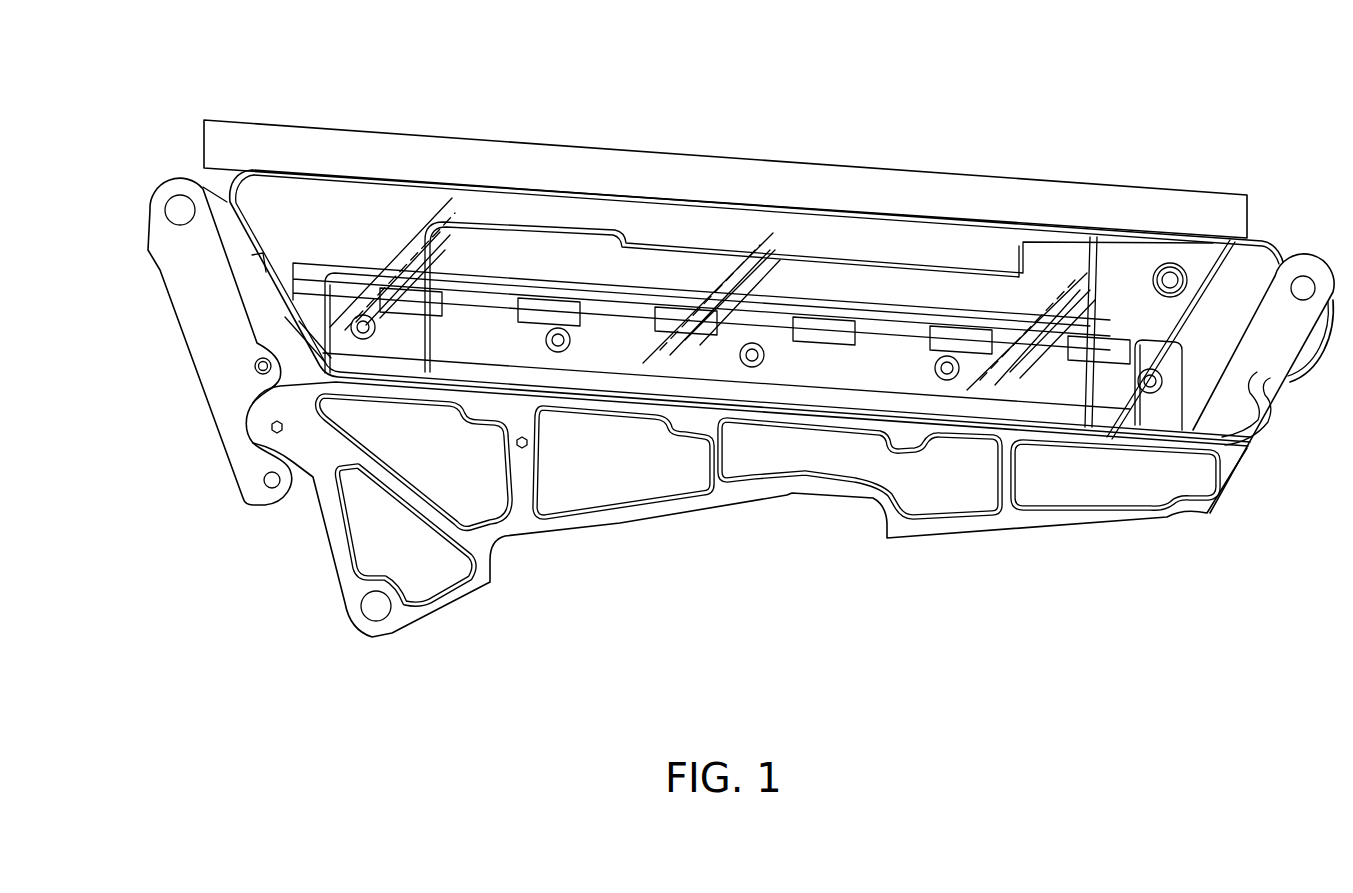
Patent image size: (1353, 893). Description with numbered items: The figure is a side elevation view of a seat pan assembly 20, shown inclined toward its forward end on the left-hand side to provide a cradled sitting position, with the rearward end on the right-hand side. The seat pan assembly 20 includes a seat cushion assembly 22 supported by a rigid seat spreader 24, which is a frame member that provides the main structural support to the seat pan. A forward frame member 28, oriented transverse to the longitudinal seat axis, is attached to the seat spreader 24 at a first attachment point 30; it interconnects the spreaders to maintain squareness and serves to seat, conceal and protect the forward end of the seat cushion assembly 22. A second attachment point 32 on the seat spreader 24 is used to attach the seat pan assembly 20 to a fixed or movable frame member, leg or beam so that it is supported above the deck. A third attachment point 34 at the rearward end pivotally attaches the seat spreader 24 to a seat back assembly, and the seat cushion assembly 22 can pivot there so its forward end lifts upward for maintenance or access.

The seat pan assembly 20 is at (730, 107).
The seat cushion assembly 22 is at (920, 216).
The seat spreader 24 is at (440, 570).
The forward frame member 28 is at (207, 322).
The first attachment point 30 is at (270, 427).
The second attachment point 32 is at (377, 605).
The third attachment point 34 is at (1303, 286).